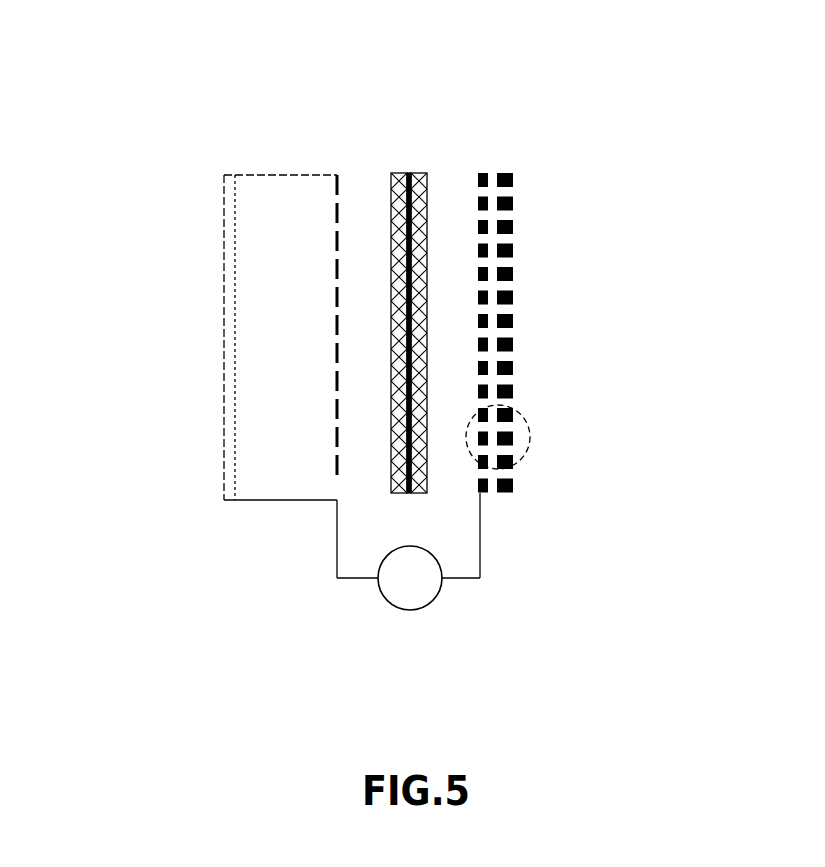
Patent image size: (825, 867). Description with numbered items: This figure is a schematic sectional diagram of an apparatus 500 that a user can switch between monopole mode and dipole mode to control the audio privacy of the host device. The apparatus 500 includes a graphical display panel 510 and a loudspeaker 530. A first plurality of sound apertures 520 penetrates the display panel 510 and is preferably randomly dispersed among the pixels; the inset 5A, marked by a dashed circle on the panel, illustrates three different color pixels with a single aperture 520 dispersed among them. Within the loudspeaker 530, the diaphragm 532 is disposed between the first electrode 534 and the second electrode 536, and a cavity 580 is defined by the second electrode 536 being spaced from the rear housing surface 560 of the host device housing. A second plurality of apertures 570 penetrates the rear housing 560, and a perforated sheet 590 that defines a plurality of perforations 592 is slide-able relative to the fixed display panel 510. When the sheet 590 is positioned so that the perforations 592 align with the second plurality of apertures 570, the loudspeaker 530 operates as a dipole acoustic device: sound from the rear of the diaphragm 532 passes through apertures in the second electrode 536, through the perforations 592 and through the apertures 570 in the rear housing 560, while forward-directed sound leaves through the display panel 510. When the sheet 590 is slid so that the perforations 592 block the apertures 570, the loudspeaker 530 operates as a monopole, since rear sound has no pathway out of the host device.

The apparatus 500 is at (411, 428).
The graphical display panel 510 is at (621, 390).
The first plurality of sound holes/apertures 520 is at (530, 301).
The loudspeaker 530 is at (352, 400).
The diaphragm 532 is at (406, 290).
The first electrode 534 is at (621, 290).
The second electrode 536 is at (330, 197).
The rear housing surface 560 is at (187, 354).
The second plurality of apertures 570 is at (223, 425).
The cavity 580 is at (258, 270).
The perforated sheet 590 is at (182, 414).
The perforations 592 is at (243, 351).
The inset 5A is at (558, 437).